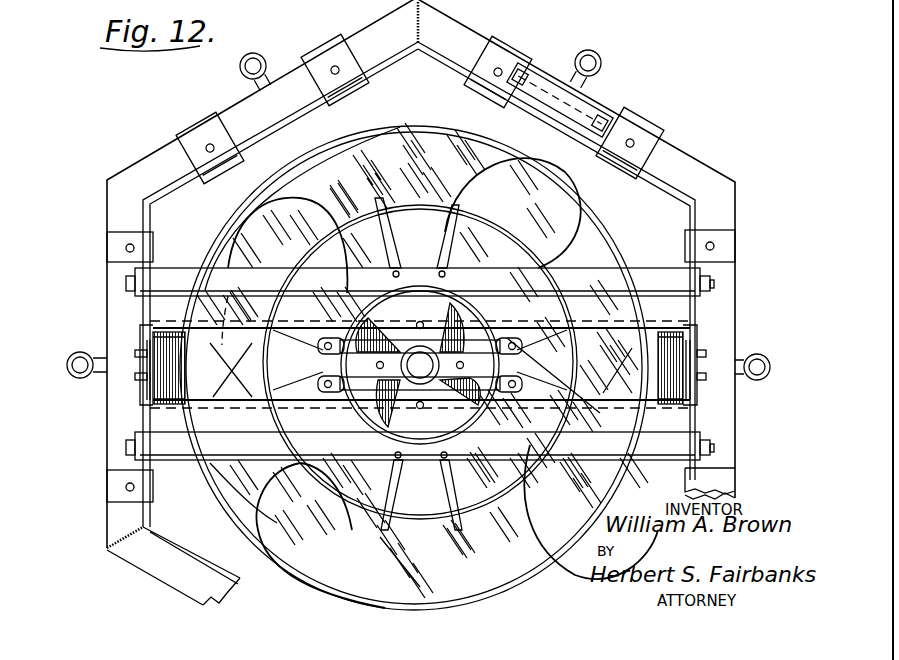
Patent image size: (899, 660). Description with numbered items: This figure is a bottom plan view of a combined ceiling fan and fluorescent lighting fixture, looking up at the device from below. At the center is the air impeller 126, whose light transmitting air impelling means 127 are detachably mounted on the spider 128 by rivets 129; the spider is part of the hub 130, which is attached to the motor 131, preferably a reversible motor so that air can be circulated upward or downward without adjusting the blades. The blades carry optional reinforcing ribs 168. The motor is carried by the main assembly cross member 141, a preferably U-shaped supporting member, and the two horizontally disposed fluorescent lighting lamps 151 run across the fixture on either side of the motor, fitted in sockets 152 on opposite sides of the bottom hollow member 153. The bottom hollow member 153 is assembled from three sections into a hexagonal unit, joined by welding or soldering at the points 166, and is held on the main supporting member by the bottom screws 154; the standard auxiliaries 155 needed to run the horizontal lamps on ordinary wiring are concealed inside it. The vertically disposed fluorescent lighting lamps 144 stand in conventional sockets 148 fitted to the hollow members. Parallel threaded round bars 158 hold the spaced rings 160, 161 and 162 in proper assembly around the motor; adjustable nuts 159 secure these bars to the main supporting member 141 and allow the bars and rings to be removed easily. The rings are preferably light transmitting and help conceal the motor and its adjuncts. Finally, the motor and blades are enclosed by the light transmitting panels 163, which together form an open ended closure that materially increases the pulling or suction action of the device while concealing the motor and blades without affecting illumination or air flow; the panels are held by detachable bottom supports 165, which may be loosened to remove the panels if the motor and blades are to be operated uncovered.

The air impeller 126 is at (412, 396).
The light transmitting air impelling means 127 is at (572, 204).
The spider 128 is at (338, 350).
The rivets 129 is at (498, 356).
The hub 130 is at (410, 362).
The motor 131 is at (356, 402).
The main assembly cross member 141 is at (690, 398).
The vertically disposed fluorescent lighting lamps 144 is at (602, 62).
The socket 148 is at (598, 80).
The horizontally disposed fluorescent lighting lamps 151 is at (158, 276).
The sockets 152 is at (126, 290).
The bottom hollow member 153 is at (683, 149).
The bottom screws 154 is at (706, 377).
The auxiliaries 155 is at (614, 103).
The parallel threaded round bars 158 is at (250, 324).
The adjustable nuts 159 is at (695, 330).
The spaced ring 160 is at (488, 312).
The spaced ring 161 is at (604, 318).
The spaced ring 162 is at (610, 258).
The light transmitting panels 163 is at (462, 68).
The detachable bottom supports 165 is at (208, 133).
The joining points 166 is at (422, 8).
The reinforcing ribs 168 is at (396, 243).